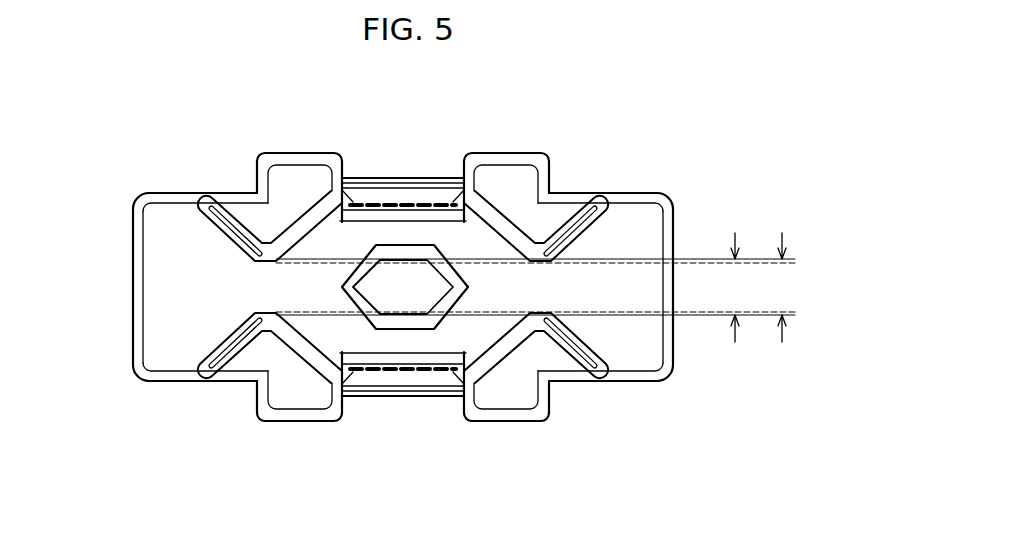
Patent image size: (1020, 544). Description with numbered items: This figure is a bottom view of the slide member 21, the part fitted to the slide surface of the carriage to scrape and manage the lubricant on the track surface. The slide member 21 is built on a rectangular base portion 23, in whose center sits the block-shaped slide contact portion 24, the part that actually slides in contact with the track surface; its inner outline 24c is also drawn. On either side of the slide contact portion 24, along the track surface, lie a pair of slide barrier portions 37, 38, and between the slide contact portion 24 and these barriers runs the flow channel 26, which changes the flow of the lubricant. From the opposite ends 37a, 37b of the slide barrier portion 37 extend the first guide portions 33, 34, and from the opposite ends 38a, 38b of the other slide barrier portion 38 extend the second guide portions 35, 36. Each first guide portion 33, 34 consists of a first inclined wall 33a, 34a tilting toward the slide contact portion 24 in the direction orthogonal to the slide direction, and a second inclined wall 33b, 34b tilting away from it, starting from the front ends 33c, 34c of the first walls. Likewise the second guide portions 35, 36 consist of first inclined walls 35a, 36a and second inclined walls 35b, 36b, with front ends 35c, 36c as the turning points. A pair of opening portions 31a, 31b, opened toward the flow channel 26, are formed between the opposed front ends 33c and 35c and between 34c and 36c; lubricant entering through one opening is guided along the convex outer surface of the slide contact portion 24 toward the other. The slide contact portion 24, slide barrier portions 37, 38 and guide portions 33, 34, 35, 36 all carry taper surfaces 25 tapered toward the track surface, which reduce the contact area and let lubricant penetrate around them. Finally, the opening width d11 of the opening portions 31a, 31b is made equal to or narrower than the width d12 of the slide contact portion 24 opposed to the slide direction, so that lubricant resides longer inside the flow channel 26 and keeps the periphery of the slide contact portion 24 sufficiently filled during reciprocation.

The slide member 21 is at (651, 88).
The base portion 23 is at (670, 203).
The slide contact portion 24 is at (346, 288).
The inner edge of central portion 24c is at (462, 303).
The taper surface 25 is at (218, 222).
The flow channel 26 is at (366, 217).
The opening portion 31a is at (250, 291).
The opening portion 31b is at (558, 297).
The first guide portion 33 is at (236, 200).
The first inclined wall 33a is at (303, 196).
The second inclined wall 33b is at (232, 196).
The front end 33c is at (222, 228).
The first guide portion 34 is at (570, 200).
The first inclined wall 34a is at (503, 196).
The second inclined wall 34b is at (582, 196).
The front end 34c is at (600, 262).
The second guide portion 35 is at (238, 382).
The first inclined wall 35a is at (303, 378).
The second inclined wall 35b is at (232, 380).
The front end 35c is at (270, 303).
The second guide portion 36 is at (565, 387).
The first inclined wall 36a is at (503, 387).
The second inclined wall 36b is at (587, 398).
The front end 36c is at (600, 316).
The slide barrier portion 37 is at (425, 178).
The opposite end 37a is at (313, 190).
The opposite end 37b is at (490, 183).
The slide barrier portion 38 is at (397, 394).
The opposite end 38a is at (320, 396).
The opposite end 38b is at (488, 394).
The opening width d11 is at (535, 287).
The width d12 is at (762, 287).